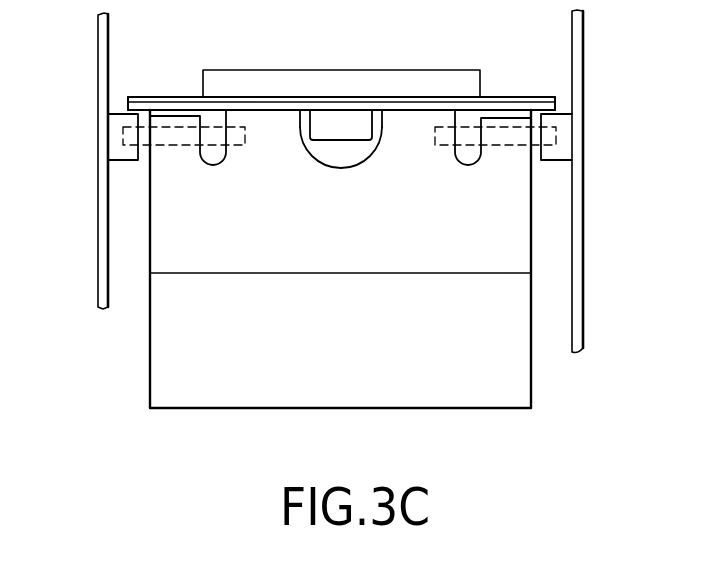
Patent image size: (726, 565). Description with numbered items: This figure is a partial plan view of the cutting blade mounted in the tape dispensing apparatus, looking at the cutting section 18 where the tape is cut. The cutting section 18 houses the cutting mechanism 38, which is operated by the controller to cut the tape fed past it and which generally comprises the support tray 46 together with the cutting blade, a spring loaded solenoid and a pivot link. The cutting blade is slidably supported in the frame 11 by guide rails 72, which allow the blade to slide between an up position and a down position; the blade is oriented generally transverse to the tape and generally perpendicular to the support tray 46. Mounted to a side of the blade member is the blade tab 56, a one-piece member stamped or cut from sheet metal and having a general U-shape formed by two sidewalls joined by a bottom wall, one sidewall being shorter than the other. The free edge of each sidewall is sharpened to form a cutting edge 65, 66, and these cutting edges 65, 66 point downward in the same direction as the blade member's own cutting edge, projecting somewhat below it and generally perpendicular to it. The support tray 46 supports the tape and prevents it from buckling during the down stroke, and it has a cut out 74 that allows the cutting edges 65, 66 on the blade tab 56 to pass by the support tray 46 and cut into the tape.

The frame 11 is at (583, 55).
The cutting section 18 is at (576, 143).
The cutting mechanism 38 is at (500, 97).
The support tray 46 is at (336, 254).
The blade tab 56 is at (338, 120).
The cutting edge 65 is at (377, 127).
The cutting edge 66 is at (298, 123).
The guide rails 72 is at (117, 112).
The cut out 74 is at (352, 166).